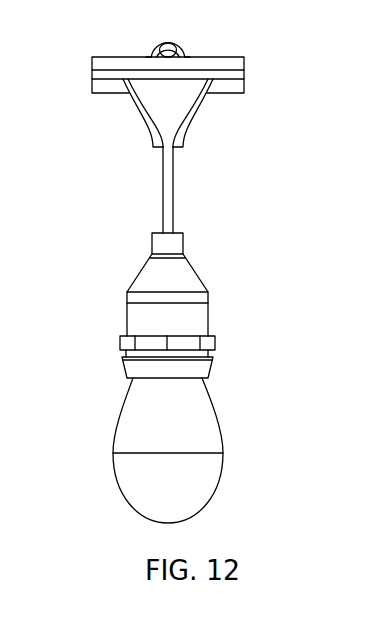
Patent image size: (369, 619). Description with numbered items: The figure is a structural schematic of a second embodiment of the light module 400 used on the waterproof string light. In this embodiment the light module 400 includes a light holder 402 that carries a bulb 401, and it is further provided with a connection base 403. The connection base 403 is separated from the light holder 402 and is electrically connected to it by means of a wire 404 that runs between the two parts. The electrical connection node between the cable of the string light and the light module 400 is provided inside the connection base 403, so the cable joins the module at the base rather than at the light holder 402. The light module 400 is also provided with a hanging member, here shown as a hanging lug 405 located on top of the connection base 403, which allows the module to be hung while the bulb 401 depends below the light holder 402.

The light module 400 is at (77, 323).
The bulb 401 is at (222, 452).
The light holder 402 is at (205, 289).
The connection base 403 is at (200, 107).
The wire 404 is at (174, 198).
The hanging lug 405 is at (176, 38).